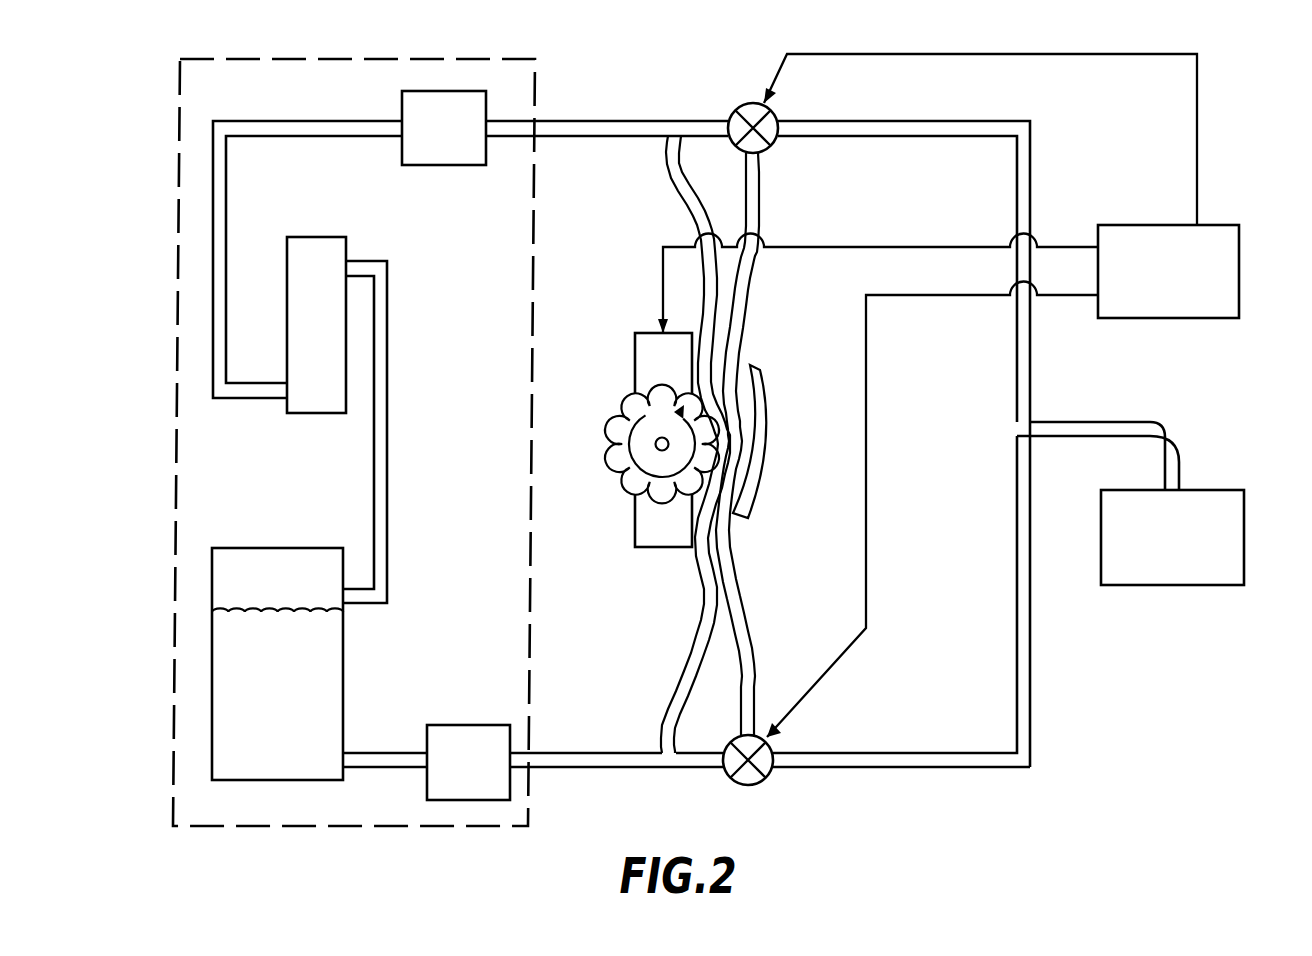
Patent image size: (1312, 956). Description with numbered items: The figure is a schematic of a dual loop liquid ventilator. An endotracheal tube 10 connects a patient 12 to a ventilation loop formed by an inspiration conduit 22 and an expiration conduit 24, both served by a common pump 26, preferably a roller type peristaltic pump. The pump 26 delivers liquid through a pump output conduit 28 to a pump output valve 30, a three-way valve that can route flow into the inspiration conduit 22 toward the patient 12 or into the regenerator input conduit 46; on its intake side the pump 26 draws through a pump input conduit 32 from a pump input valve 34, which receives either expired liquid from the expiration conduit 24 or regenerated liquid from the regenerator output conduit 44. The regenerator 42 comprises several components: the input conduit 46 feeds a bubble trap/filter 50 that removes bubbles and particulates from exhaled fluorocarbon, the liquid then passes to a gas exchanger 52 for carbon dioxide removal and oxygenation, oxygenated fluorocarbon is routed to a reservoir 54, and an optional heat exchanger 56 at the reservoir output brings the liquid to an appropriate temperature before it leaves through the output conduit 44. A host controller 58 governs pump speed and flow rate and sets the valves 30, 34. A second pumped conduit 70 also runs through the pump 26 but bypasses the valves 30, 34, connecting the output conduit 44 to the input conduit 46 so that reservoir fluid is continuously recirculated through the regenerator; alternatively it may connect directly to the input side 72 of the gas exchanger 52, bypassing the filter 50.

The endotracheal tube 10 is at (1078, 422).
The patient 12 is at (1244, 556).
The inspiration conduit 22 is at (928, 120).
The expiration conduit 24 is at (925, 767).
The pump 26 is at (615, 412).
The pump output conduit 28 is at (740, 307).
The pump output valve 30 is at (740, 102).
The pump input conduit 32 is at (757, 653).
The pump input valve 34 is at (757, 785).
The regenerator 42 is at (282, 58).
The output conduit 44 is at (562, 768).
The input conduit 46 is at (612, 120).
The bubble trap/filter 50 is at (420, 165).
The gas exchanger 52 is at (313, 415).
The reservoir 54 is at (342, 695).
The heat exchanger 56 is at (483, 723).
The host controller 58 is at (1240, 287).
The second pumped conduit 70 is at (687, 215).
The input side 72 is at (228, 230).